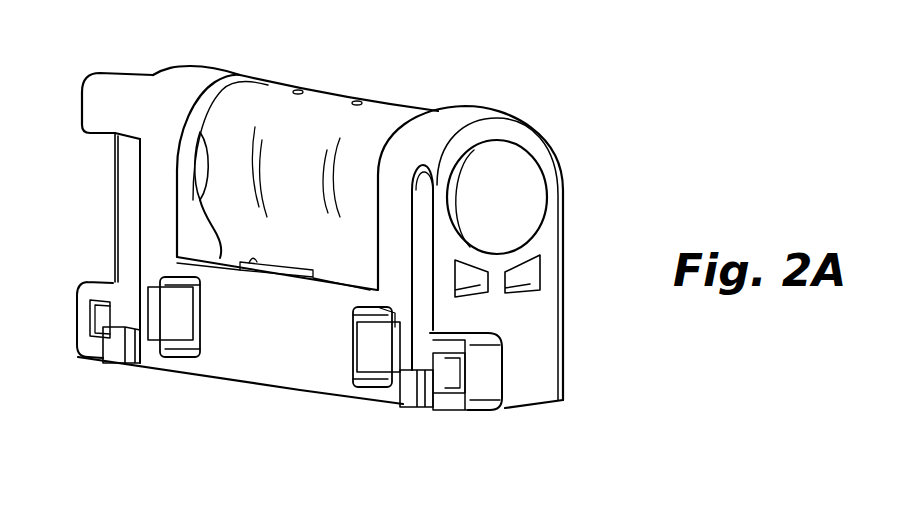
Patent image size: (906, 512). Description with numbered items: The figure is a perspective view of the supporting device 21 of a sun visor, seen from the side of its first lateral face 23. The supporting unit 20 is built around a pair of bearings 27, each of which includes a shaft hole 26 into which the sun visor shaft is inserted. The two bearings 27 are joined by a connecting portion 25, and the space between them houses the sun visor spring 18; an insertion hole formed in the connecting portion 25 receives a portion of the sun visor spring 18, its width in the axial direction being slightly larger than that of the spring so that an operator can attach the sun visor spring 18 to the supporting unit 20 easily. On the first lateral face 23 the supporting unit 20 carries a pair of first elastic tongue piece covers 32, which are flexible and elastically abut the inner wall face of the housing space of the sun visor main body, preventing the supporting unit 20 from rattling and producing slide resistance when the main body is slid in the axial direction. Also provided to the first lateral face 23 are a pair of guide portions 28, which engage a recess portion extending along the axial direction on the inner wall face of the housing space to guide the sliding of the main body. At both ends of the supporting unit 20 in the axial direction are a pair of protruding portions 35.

The sun visor spring 18 is at (320, 117).
The supporting unit 20 is at (238, 333).
The supporting device 21 is at (242, 426).
The first lateral face 23 is at (152, 206).
The connecting portion 25 is at (308, 372).
The shaft hole 26 is at (533, 180).
The bearings 27 is at (161, 128).
The guide portions 28 is at (114, 365).
The first elastic tongue piece covers 32 is at (174, 330).
The protruding portions 35 is at (86, 291).